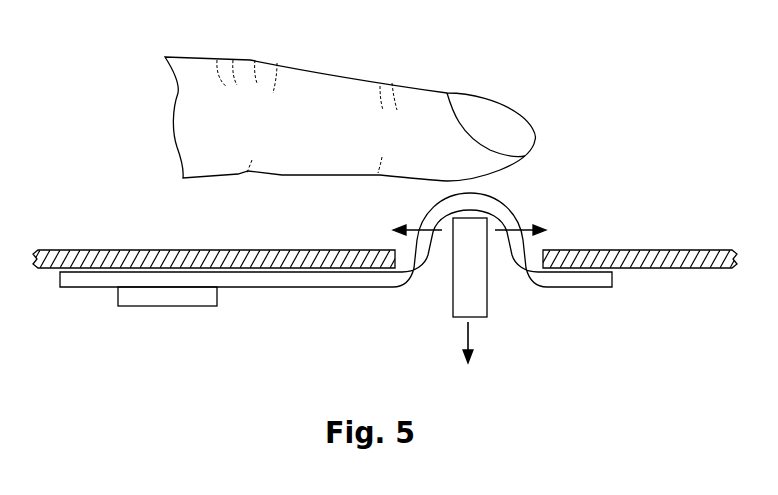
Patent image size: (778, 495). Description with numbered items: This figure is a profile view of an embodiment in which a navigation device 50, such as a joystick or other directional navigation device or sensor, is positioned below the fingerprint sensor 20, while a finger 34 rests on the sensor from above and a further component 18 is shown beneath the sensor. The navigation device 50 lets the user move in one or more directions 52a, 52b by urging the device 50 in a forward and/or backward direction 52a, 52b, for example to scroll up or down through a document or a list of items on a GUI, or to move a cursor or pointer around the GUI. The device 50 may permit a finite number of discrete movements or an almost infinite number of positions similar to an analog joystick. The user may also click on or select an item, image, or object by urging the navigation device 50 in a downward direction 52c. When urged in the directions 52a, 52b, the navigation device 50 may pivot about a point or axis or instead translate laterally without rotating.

The finger 34 is at (342, 93).
The fingerprint sensor 20 is at (280, 330).
The component under plate 18 is at (143, 297).
The navigation device 50 is at (478, 298).
The backward direction 52b is at (418, 232).
The forward direction 52a is at (525, 232).
The downward direction 52c is at (473, 337).